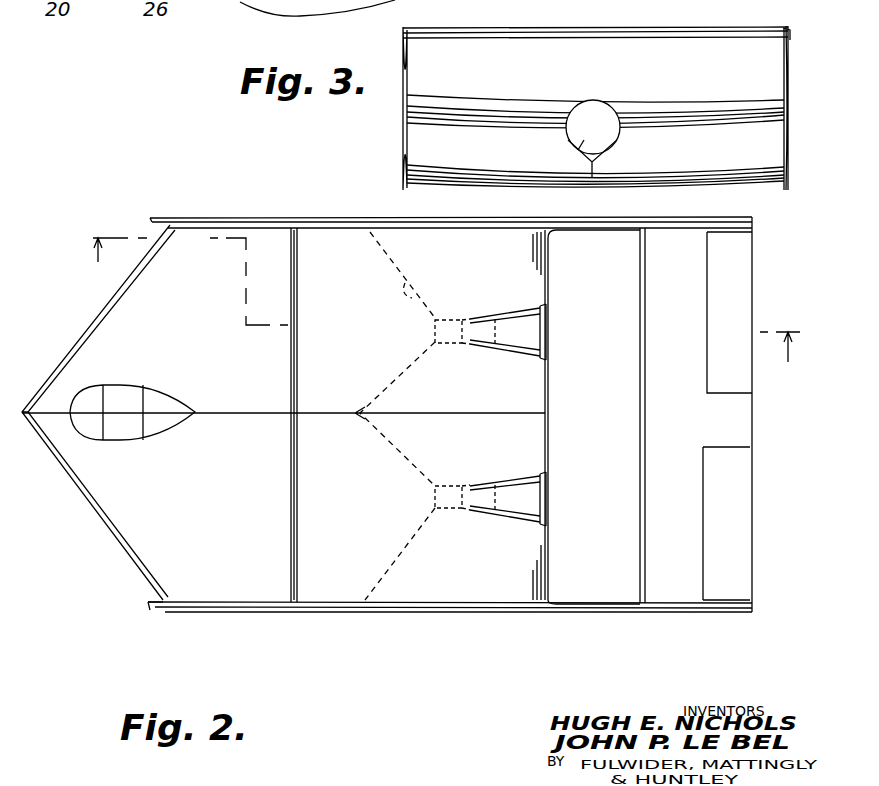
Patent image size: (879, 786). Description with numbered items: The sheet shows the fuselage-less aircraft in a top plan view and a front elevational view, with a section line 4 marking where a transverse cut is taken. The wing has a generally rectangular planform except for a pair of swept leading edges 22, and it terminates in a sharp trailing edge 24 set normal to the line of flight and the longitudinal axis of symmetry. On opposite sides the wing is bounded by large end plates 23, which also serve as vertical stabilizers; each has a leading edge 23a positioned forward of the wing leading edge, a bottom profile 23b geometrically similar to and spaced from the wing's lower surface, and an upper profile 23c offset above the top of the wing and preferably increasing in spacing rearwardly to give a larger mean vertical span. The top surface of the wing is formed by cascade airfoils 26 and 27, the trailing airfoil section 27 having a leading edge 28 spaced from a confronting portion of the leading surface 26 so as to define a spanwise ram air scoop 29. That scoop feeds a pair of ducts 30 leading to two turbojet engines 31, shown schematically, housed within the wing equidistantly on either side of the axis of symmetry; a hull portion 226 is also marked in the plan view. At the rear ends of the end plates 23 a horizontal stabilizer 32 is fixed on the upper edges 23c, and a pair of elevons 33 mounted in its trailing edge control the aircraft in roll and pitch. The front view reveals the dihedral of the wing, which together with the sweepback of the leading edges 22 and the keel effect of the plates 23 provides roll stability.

In FIG. 2, the section line 4- 4 is at (438, 317).
In FIG. 2, the swept leading edges 22 is at (78, 338).
In FIG. 3, the end plates 23 is at (400, 170).
In FIG. 2, the end plates 23 is at (300, 216).
In FIG. 2, the leading edge of end plate 23a is at (145, 605).
In FIG. 3, the bottom profile of end plate 23b is at (788, 182).
In FIG. 3, the upper profile of end plate 23c is at (790, 30).
In FIG. 2, the trailing edge 24 is at (545, 330).
In FIG. 3, the leading airfoil 26 is at (702, 152).
In FIG. 2, the leading airfoil 26 is at (218, 366).
In FIG. 2, the hull bottom portion 226 is at (232, 324).
In FIG. 3, the trailing airfoil section 27 is at (505, 84).
In FIG. 2, the leading edge of trailing airfoil section 28 is at (291, 563).
In FIG. 3, the air scoop 29 is at (407, 112).
In FIG. 2, the air scoop 29 is at (275, 478).
In FIG. 2, the ducts 30 is at (408, 290).
In FIG. 2, the turbojet engines 31 is at (480, 512).
In FIG. 3, the horizontal stabilizer 32 is at (618, 30).
In FIG. 2, the horizontal stabilizer 32 is at (650, 503).
In FIG. 2, the elevons 33 is at (735, 258).